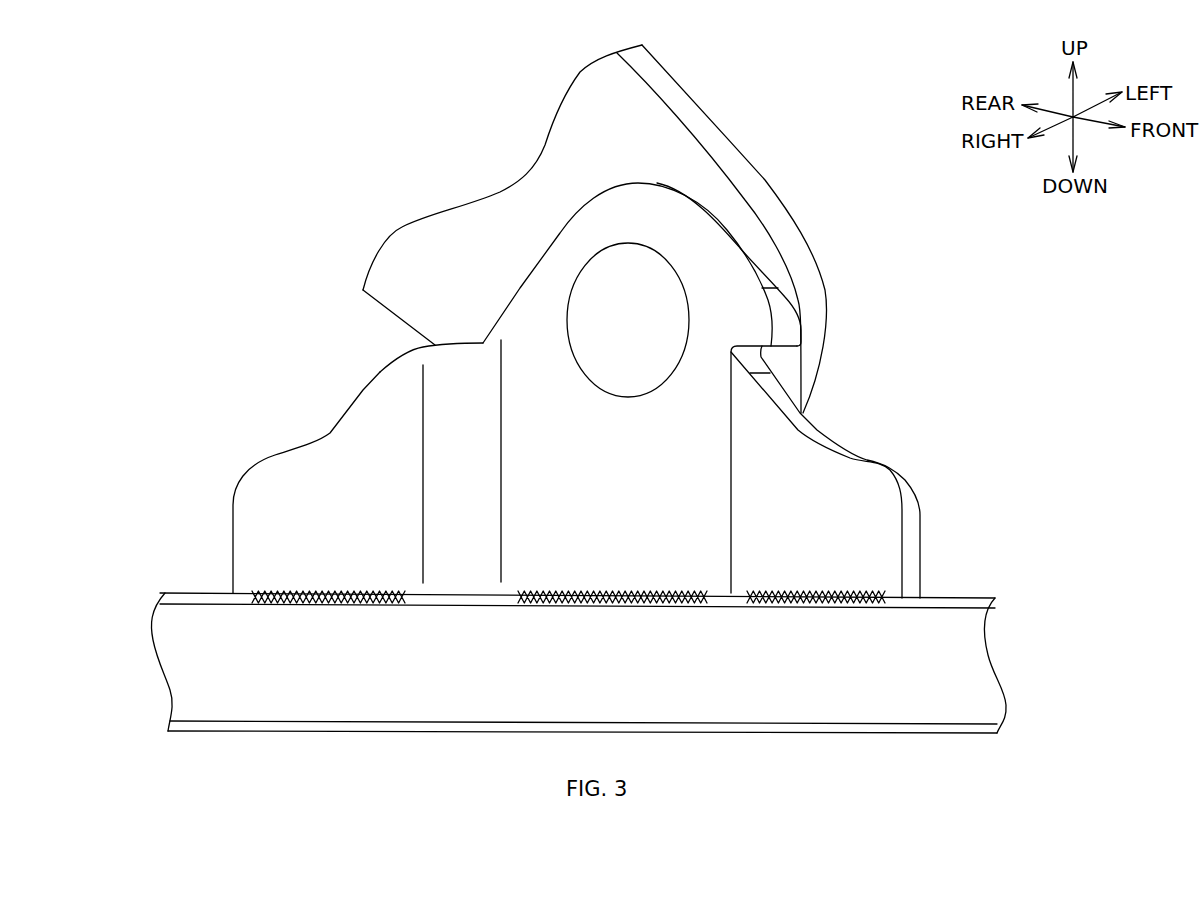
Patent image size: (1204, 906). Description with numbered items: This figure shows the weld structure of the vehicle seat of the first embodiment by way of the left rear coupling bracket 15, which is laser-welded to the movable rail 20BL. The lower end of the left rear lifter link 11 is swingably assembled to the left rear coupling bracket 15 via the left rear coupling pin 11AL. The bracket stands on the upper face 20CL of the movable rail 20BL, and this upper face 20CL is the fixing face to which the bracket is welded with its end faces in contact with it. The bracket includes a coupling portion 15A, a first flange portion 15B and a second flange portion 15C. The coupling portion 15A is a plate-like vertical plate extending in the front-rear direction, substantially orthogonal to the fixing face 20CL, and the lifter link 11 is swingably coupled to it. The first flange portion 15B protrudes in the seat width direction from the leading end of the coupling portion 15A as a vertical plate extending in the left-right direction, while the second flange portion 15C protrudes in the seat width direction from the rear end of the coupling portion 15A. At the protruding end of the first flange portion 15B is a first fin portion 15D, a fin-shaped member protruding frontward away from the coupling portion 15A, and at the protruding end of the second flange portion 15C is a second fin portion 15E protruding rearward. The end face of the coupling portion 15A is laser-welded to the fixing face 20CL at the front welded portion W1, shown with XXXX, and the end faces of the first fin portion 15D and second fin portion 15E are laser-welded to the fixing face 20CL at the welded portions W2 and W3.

The left rear lifter link 11 is at (797, 210).
The left rear coupling pin 11AL is at (640, 320).
The left rear coupling bracket 15 is at (330, 432).
The coupling portion 15A is at (677, 460).
The first flange portion 15B is at (782, 365).
The second flange portion 15C is at (453, 540).
The first fin portion 15D is at (788, 488).
The second fin portion 15E is at (317, 515).
The upper face of the movable rail 20CL is at (958, 598).
The movable rail 20BL is at (977, 682).
The front welded portion W1 is at (626, 603).
The welded portion W2 is at (830, 603).
The welded portion W3 is at (323, 605).